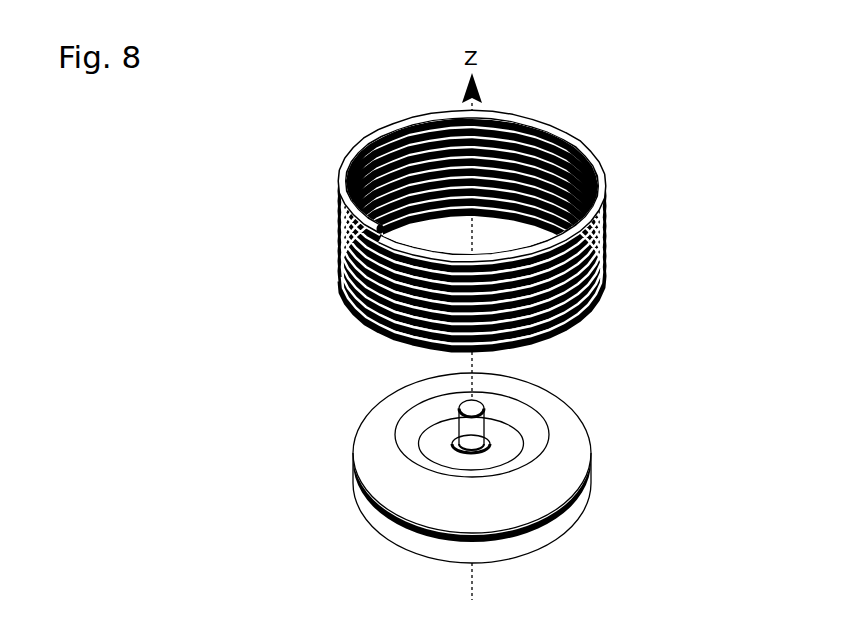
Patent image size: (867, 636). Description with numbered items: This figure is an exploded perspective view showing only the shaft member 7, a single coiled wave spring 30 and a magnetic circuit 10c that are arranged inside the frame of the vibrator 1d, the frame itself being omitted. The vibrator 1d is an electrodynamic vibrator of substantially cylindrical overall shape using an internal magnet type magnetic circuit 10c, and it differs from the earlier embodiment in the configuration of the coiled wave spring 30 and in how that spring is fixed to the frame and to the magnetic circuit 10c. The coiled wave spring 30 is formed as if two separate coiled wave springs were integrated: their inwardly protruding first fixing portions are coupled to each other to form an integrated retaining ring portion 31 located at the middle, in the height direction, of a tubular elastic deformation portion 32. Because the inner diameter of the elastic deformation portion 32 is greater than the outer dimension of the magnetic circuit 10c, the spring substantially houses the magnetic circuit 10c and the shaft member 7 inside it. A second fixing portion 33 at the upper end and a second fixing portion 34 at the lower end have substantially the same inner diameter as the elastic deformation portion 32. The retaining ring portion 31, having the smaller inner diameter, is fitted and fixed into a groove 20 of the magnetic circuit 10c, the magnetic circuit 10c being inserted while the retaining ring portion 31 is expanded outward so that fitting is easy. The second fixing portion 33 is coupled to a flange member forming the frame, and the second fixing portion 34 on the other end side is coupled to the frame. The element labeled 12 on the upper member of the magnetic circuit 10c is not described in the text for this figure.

The vibrator 1d is at (296, 148).
The coiled wave spring 30 is at (607, 222).
The retaining ring portion 31 is at (405, 222).
The elastic deformation portion 32 is at (607, 208).
The second fixing portion 33 is at (337, 178).
The second fixing portion 34 is at (358, 318).
The magnetic circuit 10c is at (785, 453).
The upper disc member 12 is at (590, 446).
The groove 20 is at (590, 480).
The shaft member 7 is at (463, 402).